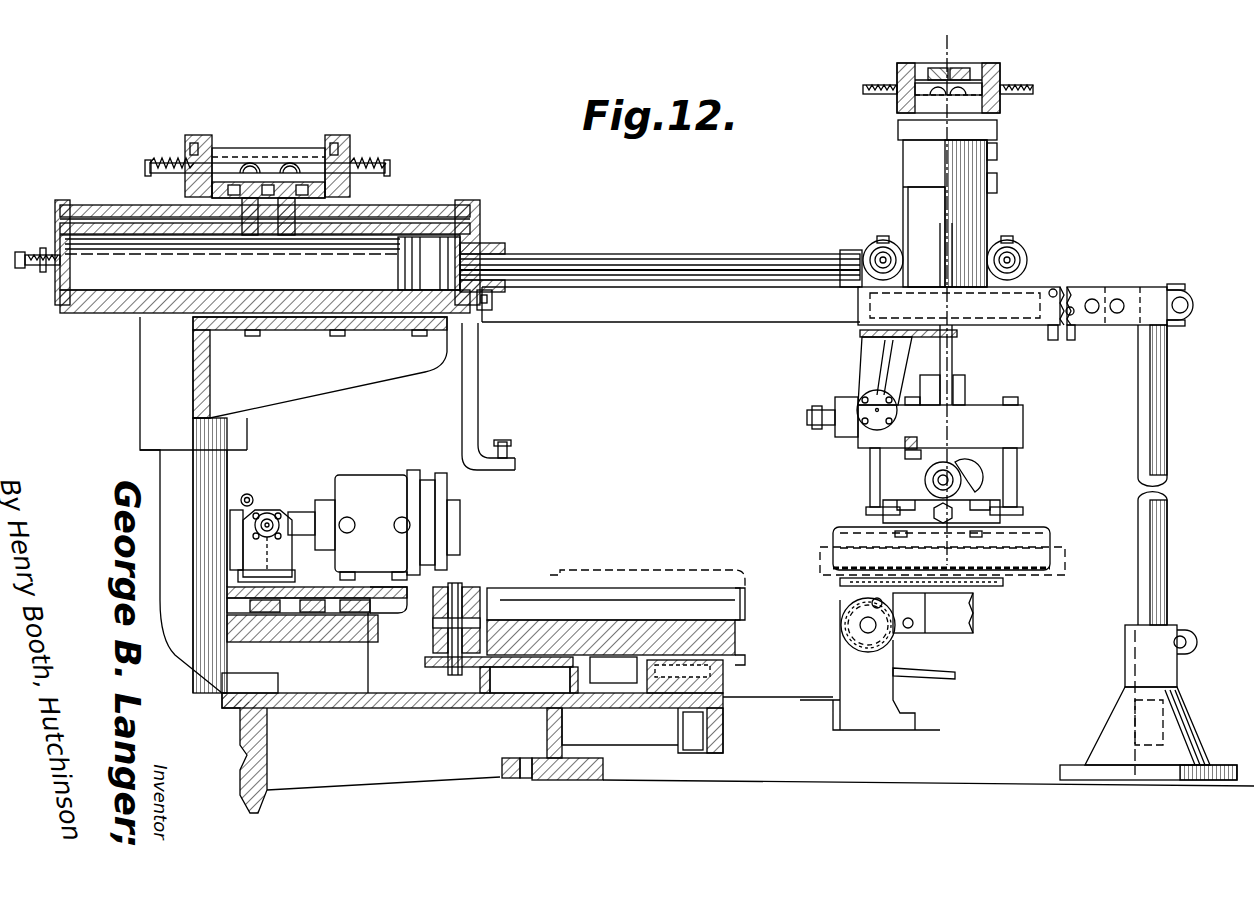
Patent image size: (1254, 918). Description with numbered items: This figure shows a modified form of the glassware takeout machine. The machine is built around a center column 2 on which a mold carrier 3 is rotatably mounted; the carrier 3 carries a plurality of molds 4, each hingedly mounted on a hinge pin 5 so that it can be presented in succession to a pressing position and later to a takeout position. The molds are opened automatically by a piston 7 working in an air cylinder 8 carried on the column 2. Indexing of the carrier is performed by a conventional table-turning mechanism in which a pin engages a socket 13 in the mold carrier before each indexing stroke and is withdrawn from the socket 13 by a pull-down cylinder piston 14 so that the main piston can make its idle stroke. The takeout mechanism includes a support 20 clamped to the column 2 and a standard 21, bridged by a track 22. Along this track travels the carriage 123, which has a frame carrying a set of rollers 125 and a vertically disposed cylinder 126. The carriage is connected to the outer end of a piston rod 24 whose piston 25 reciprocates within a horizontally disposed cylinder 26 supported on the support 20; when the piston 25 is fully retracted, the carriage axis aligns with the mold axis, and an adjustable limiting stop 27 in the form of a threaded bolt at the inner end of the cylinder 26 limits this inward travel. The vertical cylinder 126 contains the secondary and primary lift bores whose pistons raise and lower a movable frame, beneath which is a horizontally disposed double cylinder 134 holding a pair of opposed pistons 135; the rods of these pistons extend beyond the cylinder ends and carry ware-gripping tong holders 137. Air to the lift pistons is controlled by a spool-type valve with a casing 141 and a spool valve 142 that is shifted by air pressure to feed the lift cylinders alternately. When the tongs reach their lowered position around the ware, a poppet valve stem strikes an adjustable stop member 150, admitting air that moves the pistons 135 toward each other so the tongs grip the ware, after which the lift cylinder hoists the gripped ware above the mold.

The center column 2 is at (222, 472).
The mold carrier 3 is at (442, 711).
The mold 4 is at (497, 603).
The hinge pin 5 is at (455, 619).
The piston 7 is at (298, 515).
The air cylinder 8 is at (360, 478).
The socket 13 is at (526, 778).
The pull-down cylinder piston 14 is at (948, 290).
The support 20 is at (320, 367).
The standard 21 is at (1176, 435).
The track 22 is at (688, 312).
The piston rod 24 is at (672, 255).
The piston 25 is at (437, 255).
The cylinder 26 is at (267, 224).
The adjustable limiting stop 27 is at (30, 250).
The carriage 123 is at (1043, 274).
The rollers 125 is at (1030, 244).
The vertically disposed cylinder 126 is at (923, 206).
The double cylinder 134 is at (965, 470).
The opposed pistons 135 is at (1053, 530).
The tong holder 137 is at (978, 508).
The valve casing 141 is at (963, 72).
The spool valve 142 is at (985, 72).
The adjustable stop member 150 is at (519, 460).